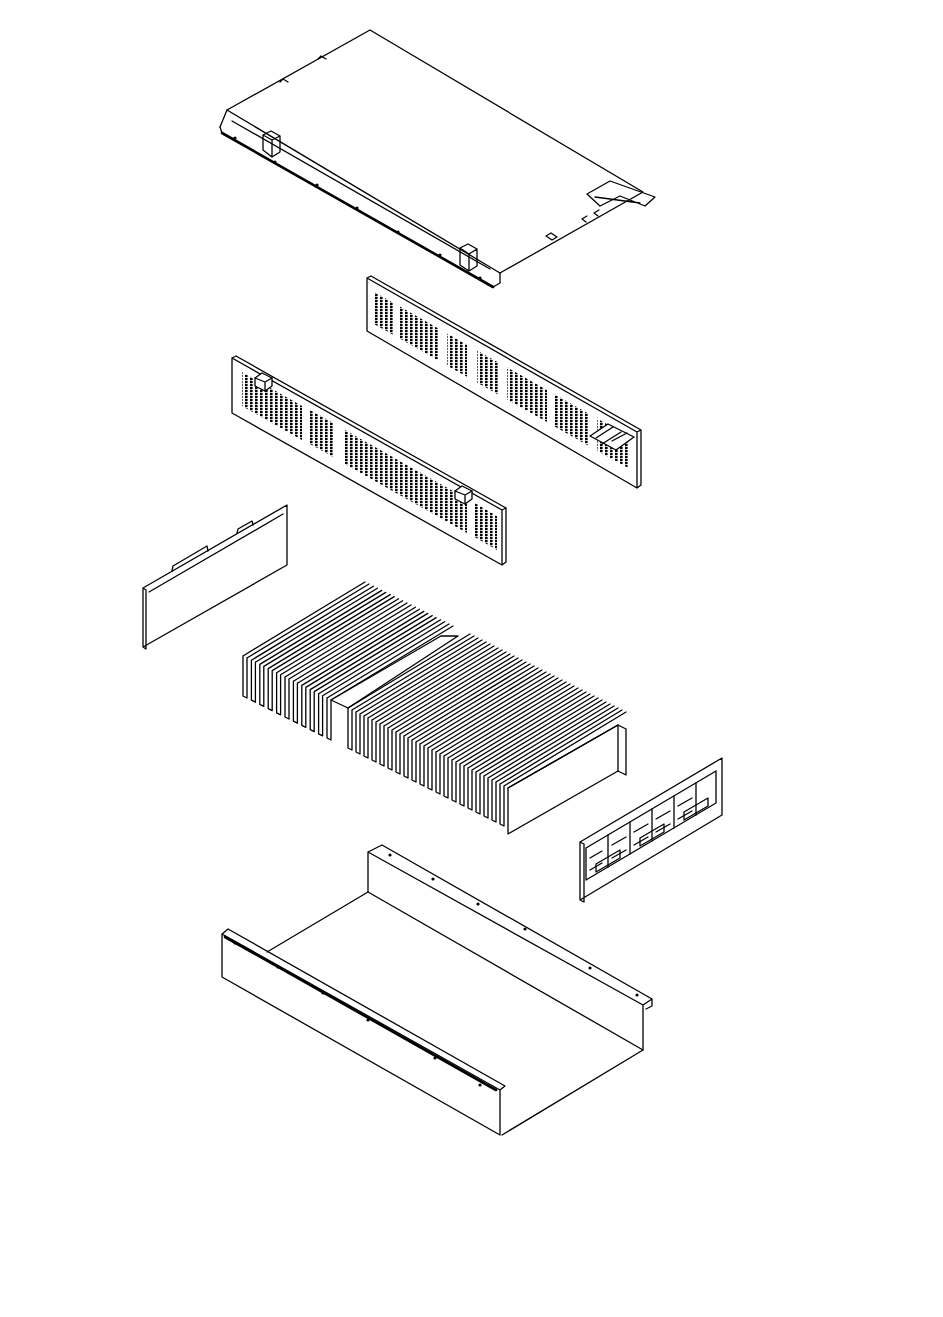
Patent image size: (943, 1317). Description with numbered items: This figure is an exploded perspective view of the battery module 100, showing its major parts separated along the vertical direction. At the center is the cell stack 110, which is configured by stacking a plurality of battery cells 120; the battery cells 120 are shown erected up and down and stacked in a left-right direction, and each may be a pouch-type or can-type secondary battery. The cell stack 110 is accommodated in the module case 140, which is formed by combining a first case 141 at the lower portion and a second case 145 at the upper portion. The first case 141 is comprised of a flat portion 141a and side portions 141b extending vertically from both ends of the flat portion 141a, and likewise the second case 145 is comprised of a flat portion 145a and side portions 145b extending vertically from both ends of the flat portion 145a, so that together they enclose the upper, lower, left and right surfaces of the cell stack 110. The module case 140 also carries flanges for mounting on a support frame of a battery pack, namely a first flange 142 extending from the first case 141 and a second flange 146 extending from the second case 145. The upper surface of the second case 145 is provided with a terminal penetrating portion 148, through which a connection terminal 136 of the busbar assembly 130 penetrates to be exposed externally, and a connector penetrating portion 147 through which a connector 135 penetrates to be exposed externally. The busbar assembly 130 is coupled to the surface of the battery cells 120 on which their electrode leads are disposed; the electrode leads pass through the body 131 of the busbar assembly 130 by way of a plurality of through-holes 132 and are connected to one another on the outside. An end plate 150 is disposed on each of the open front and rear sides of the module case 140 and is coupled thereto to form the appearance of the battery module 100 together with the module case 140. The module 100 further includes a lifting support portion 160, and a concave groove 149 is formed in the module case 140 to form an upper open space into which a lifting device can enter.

The battery module 100 is at (73, 35).
The cell stack 110 is at (630, 682).
The battery cell 120 is at (526, 805).
The busbar assembly 130 is at (656, 437).
The body 131 is at (232, 364).
The through-holes 132 is at (290, 423).
The connector 135 is at (610, 428).
The connection terminal 136 is at (267, 375).
The module case 140 is at (540, 94).
The first case 141 is at (758, 1020).
The flat portion 141a is at (588, 1053).
The side portions 141b is at (628, 1027).
The first flange 142 is at (582, 960).
The second case 145 is at (120, 93).
The flat portion 145a is at (230, 108).
The side portions 145b is at (228, 128).
The second flange 146 is at (272, 162).
The connector penetrating portion 147 is at (607, 200).
The terminal penetrating portion 148 is at (274, 158).
The concave groove 149 is at (549, 236).
The end plate 150 is at (160, 575).
The lifting support portion 160 is at (632, 812).